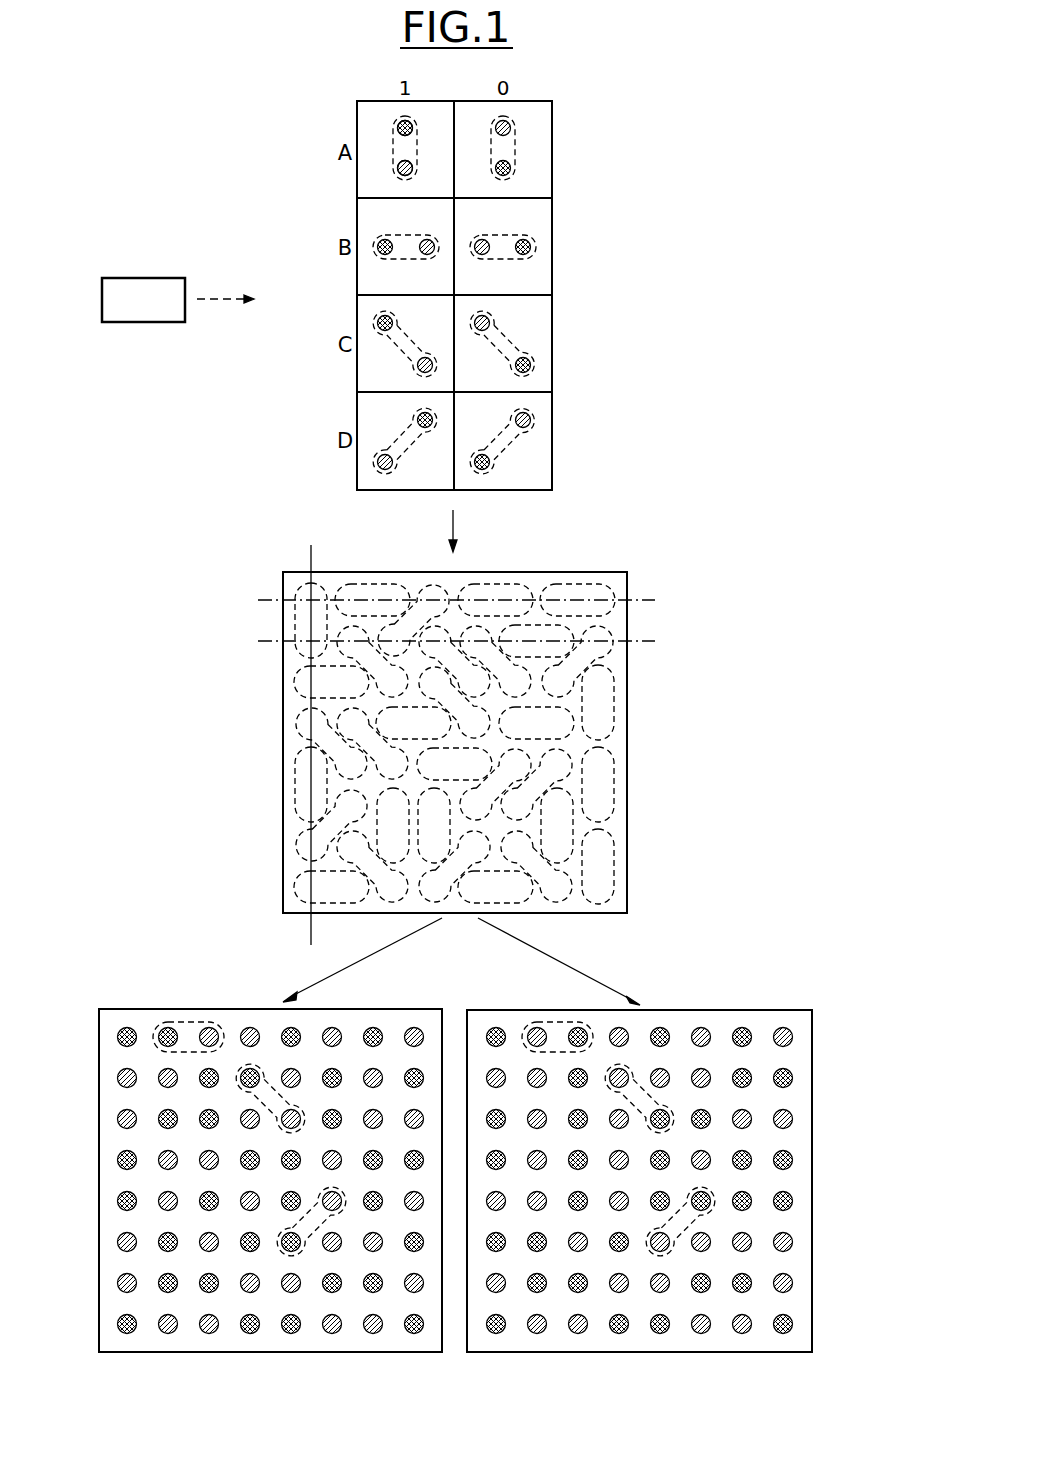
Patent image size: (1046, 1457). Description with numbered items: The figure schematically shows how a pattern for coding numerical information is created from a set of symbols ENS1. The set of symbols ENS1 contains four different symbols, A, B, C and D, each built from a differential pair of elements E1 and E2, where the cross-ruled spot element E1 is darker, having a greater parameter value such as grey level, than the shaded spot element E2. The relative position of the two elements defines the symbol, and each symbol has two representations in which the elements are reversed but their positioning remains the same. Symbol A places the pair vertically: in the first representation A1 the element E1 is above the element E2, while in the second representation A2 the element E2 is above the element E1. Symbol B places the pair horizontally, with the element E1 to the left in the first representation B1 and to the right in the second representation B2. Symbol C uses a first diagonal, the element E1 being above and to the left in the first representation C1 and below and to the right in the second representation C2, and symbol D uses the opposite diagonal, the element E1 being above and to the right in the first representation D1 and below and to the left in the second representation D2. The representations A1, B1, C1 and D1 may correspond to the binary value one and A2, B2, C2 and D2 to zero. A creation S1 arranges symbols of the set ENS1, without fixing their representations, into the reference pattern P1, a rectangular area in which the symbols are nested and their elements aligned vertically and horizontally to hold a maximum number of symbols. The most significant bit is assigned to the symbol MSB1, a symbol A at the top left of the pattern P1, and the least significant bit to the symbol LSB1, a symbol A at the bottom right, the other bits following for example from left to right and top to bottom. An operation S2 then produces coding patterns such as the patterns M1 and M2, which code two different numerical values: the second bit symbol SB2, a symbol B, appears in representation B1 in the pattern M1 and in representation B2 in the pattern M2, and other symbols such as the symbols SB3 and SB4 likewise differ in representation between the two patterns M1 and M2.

The set of symbols ENS1 is at (178, 300).
The element E1 is at (397, 128).
The element E2 is at (397, 168).
The first representation of symbol A A1 is at (419, 157).
The second representation of symbol A A2 is at (487, 157).
The first representation of symbol B B1 is at (409, 265).
The second representation of symbol B B2 is at (498, 265).
The first representation of symbol C C1 is at (407, 341).
The second representation of symbol C C2 is at (499, 349).
The first representation of symbol D D1 is at (407, 446).
The second representation of symbol D D2 is at (499, 438).
The creation S1 is at (450, 537).
The operation S2 is at (367, 962).
The reference pattern P1 is at (215, 771).
The most significant bit symbol MSB1 is at (293, 620).
The least significant bit symbol LSB1 is at (612, 872).
The second bit symbol SB2 is at (370, 584).
The symbol SB3 is at (447, 630).
The symbol SB4 is at (505, 752).
The pattern M1 is at (85, 1190).
The pattern M2 is at (830, 1190).